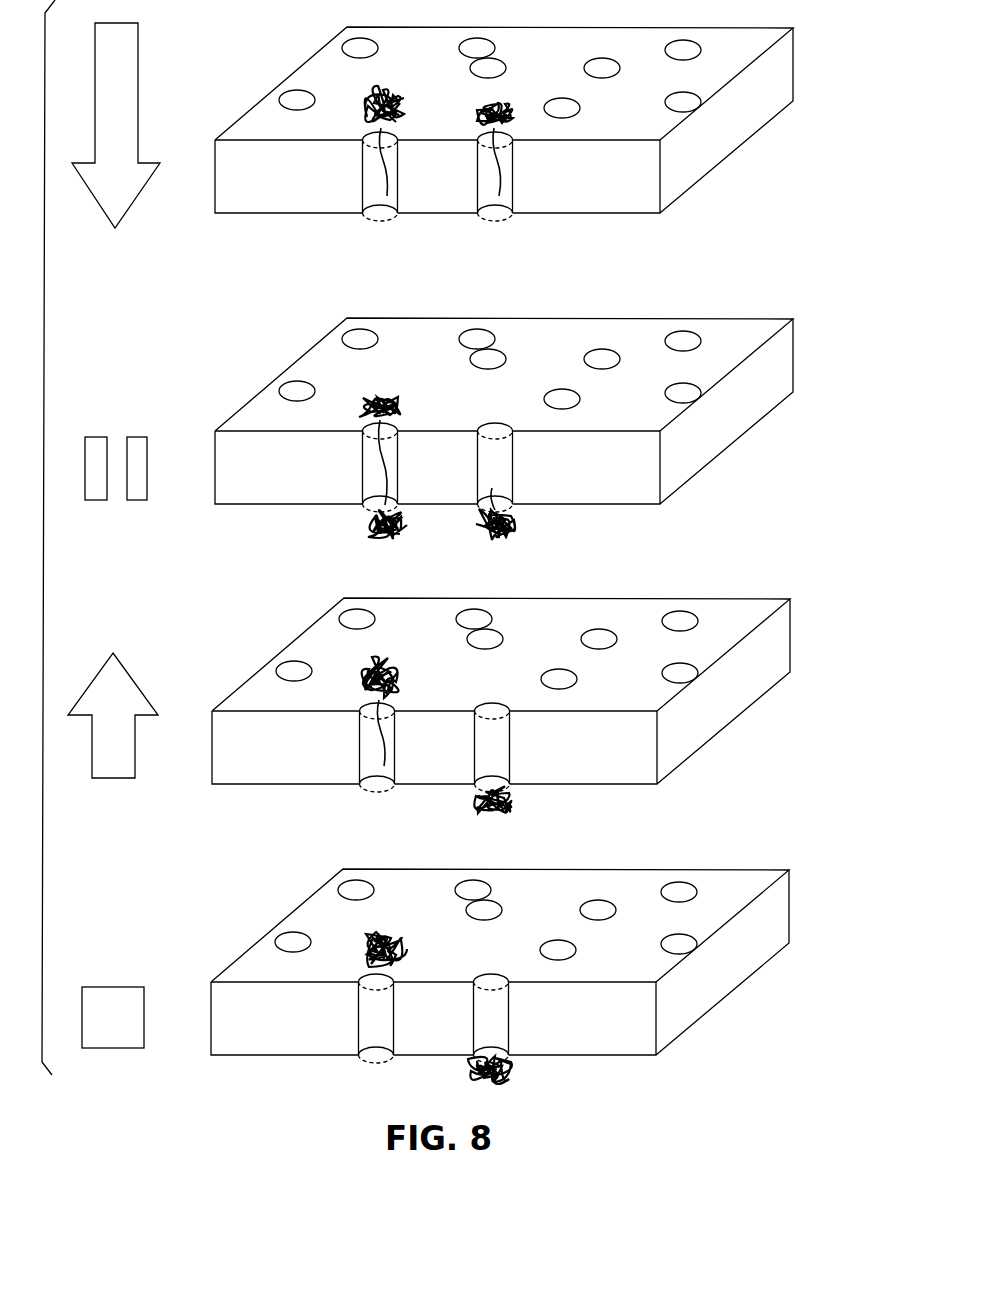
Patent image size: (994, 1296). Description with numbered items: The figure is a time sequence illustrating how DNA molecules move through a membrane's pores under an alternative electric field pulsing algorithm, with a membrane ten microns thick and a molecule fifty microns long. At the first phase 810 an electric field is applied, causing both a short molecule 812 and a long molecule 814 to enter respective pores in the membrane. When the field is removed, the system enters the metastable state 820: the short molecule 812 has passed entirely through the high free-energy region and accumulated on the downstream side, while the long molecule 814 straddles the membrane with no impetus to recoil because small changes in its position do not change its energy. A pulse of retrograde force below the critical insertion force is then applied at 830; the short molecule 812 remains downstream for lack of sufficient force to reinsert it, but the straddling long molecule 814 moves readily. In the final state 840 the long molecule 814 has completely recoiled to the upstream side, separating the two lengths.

The electric field application state 810 is at (794, 67).
The short molecule 812 is at (517, 103).
The long molecule 814 is at (388, 87).
The metastable state 820 is at (531, 429).
The retrograde force pulse state 830 is at (529, 705).
The recoiled state 840 is at (529, 976).